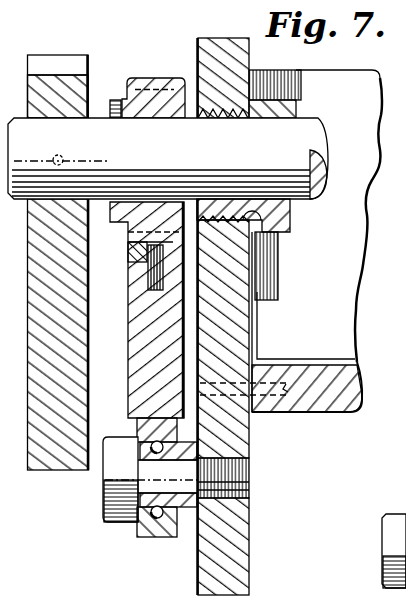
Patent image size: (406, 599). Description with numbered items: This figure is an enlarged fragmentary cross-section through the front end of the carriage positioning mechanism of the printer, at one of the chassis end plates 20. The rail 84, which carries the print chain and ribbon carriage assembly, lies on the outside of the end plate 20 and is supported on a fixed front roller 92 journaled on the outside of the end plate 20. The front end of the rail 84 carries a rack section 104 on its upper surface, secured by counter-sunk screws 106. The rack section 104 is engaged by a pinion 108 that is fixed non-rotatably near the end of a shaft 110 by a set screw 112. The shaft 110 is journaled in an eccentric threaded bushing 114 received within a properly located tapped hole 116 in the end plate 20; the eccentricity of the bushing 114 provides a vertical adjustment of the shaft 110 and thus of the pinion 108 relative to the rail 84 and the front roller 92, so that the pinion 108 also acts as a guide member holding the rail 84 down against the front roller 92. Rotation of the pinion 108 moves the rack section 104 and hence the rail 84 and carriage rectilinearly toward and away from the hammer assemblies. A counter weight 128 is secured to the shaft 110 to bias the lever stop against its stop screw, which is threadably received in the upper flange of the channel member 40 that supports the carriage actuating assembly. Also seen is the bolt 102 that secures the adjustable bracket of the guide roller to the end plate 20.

The end plate 20 is at (222, 38).
The channel member 40 is at (338, 291).
The rail 84 is at (137, 368).
The front roller 92 is at (158, 540).
The bolt 102 is at (382, 553).
The rack section 104 is at (131, 250).
The counter-sunk screw 106 is at (144, 275).
The pinion 108 is at (173, 69).
The shaft 110 is at (197, 156).
The set screw 112 is at (117, 100).
The eccentric threaded bushing 114 is at (298, 208).
The tapped hole 116 is at (272, 236).
The counter weight 128 is at (58, 471).